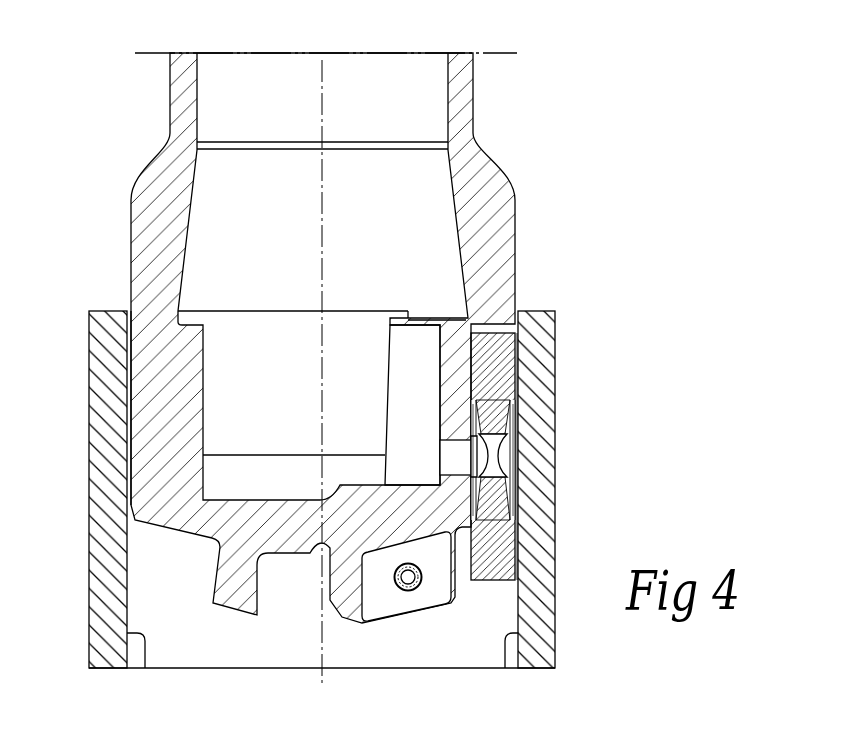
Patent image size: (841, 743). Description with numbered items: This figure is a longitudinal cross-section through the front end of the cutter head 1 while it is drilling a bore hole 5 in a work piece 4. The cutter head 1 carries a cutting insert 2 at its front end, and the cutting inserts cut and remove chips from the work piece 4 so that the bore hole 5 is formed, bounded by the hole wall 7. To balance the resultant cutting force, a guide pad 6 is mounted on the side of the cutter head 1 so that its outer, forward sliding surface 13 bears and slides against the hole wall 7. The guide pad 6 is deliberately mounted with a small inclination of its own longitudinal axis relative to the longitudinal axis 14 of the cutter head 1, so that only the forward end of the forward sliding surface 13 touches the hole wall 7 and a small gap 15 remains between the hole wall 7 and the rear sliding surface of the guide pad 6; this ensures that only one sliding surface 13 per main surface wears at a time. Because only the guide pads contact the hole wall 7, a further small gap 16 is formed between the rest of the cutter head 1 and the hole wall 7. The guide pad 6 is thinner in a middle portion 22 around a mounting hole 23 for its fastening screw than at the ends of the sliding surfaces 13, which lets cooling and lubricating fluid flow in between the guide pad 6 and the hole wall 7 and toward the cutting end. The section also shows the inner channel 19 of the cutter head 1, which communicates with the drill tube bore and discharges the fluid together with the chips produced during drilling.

The cutter head 1 is at (483, 223).
The cutting insert 2 is at (396, 607).
The work piece 4 is at (104, 445).
The bore hole 5 is at (408, 653).
The guide pad 6 is at (498, 349).
The hole wall 7 is at (145, 668).
The sliding surface 13 is at (518, 563).
The longitudinal axis 14 is at (322, 640).
The gap 15 is at (518, 378).
The gap 16 is at (128, 348).
The inner channel 19 is at (427, 99).
The middle portion 22 is at (495, 426).
The mounting hole 23 is at (498, 462).